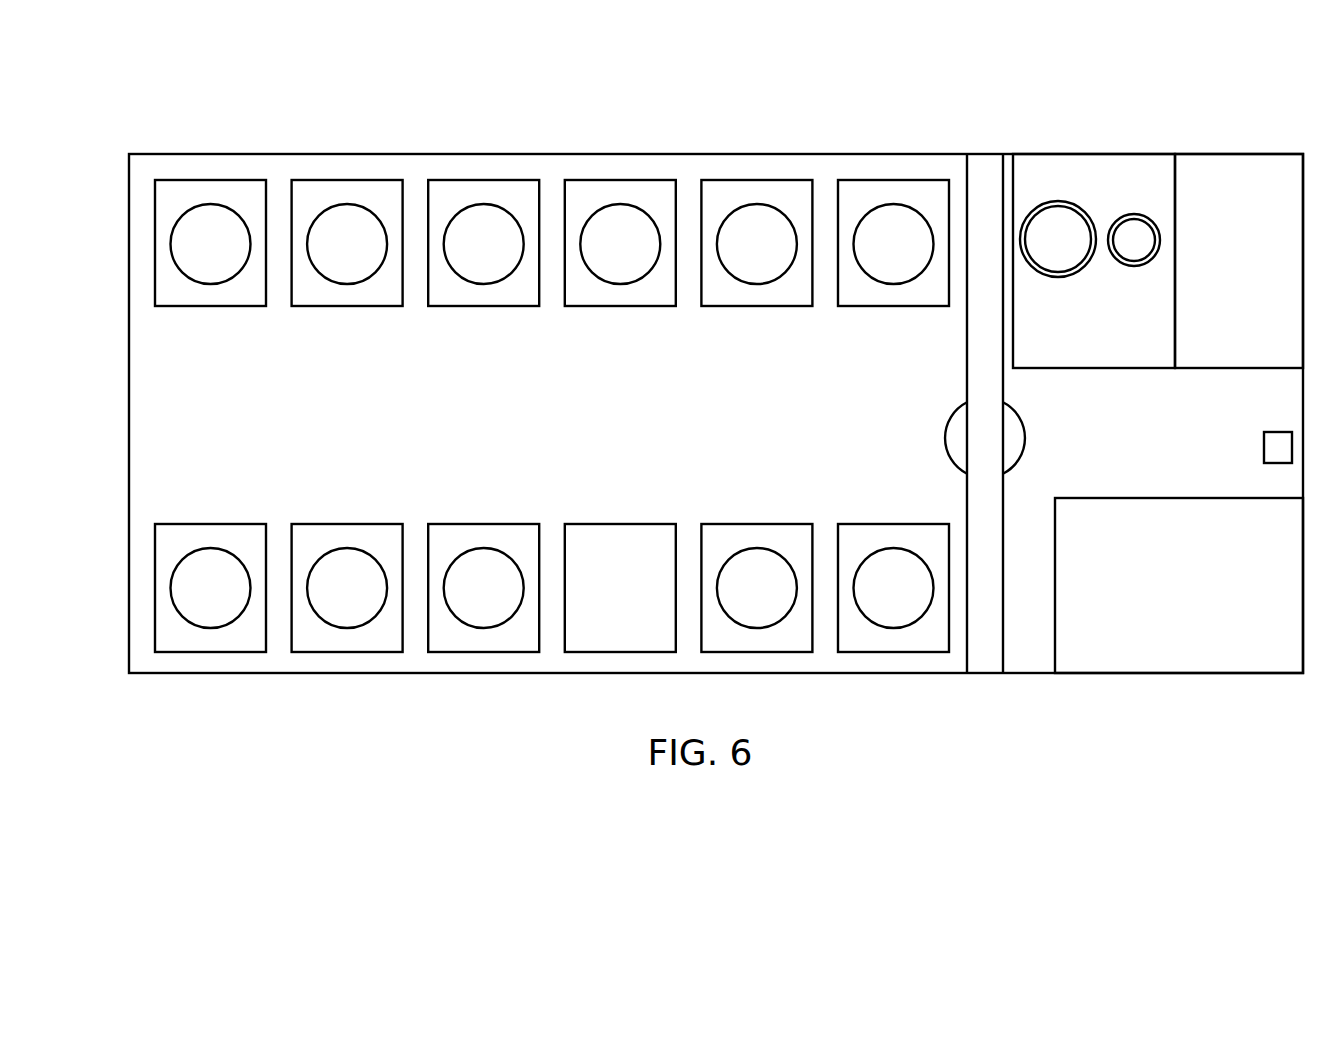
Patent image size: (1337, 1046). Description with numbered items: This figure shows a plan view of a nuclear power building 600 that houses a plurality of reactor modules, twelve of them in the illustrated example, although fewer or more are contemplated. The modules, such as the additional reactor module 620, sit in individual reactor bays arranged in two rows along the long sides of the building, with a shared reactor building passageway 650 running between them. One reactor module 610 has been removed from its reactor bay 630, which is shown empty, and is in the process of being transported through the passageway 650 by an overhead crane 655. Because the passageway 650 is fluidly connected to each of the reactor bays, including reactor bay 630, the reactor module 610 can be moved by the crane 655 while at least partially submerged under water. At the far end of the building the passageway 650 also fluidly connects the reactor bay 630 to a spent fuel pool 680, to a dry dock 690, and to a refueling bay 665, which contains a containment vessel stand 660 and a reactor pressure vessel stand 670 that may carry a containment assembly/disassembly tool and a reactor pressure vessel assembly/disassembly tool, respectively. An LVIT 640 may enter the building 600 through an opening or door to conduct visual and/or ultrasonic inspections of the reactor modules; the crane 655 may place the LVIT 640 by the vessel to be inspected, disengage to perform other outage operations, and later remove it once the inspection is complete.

The nuclear power building 600 is at (992, 107).
The reactor module 610 is at (943, 437).
The additional reactor module 620 is at (225, 546).
The reactor bay 630 is at (620, 588).
The LVIT 640 is at (1260, 447).
The shared reactor building passageway 650 is at (552, 416).
The overhead crane 655 is at (966, 341).
The containment vessel stand 660 is at (1058, 278).
The refueling bay 665 is at (1105, 235).
The reactor pressure vessel stand 670 is at (1130, 267).
The spent fuel pool 680 is at (1239, 261).
The dry dock 690 is at (1179, 585).